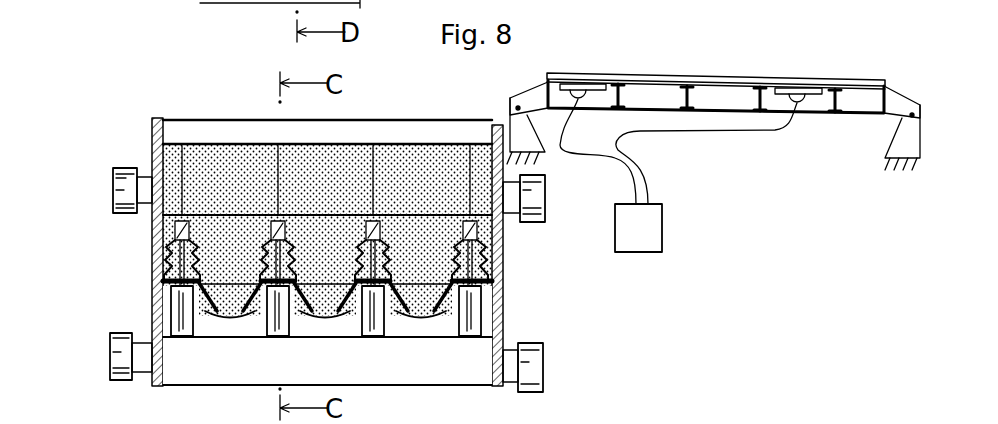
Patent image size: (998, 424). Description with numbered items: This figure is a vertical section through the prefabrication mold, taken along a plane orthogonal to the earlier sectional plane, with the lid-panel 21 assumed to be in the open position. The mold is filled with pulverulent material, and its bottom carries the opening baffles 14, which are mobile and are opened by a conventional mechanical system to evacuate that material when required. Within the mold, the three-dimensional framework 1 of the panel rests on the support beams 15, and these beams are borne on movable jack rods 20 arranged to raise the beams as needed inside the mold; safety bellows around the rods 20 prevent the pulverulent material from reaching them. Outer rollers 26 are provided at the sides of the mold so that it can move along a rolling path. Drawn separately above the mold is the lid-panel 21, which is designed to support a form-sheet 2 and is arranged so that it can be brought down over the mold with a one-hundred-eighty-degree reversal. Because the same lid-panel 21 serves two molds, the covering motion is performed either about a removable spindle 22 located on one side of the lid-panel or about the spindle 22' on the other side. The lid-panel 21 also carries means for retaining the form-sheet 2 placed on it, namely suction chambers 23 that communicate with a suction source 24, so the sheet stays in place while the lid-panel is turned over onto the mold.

The three-dimensional framework 1 is at (280, 182).
The form-sheet 2 is at (663, 79).
The opening baffles 14 is at (333, 332).
The support beams 15 is at (290, 236).
The jack rods 20 is at (171, 337).
The lid-panel 21 is at (850, 105).
The removable spindle 22 is at (521, 111).
The spindle 22' is at (921, 117).
The suction chambers 23 is at (790, 88).
The suction source 24 is at (656, 233).
The outer rollers 26 is at (546, 345).